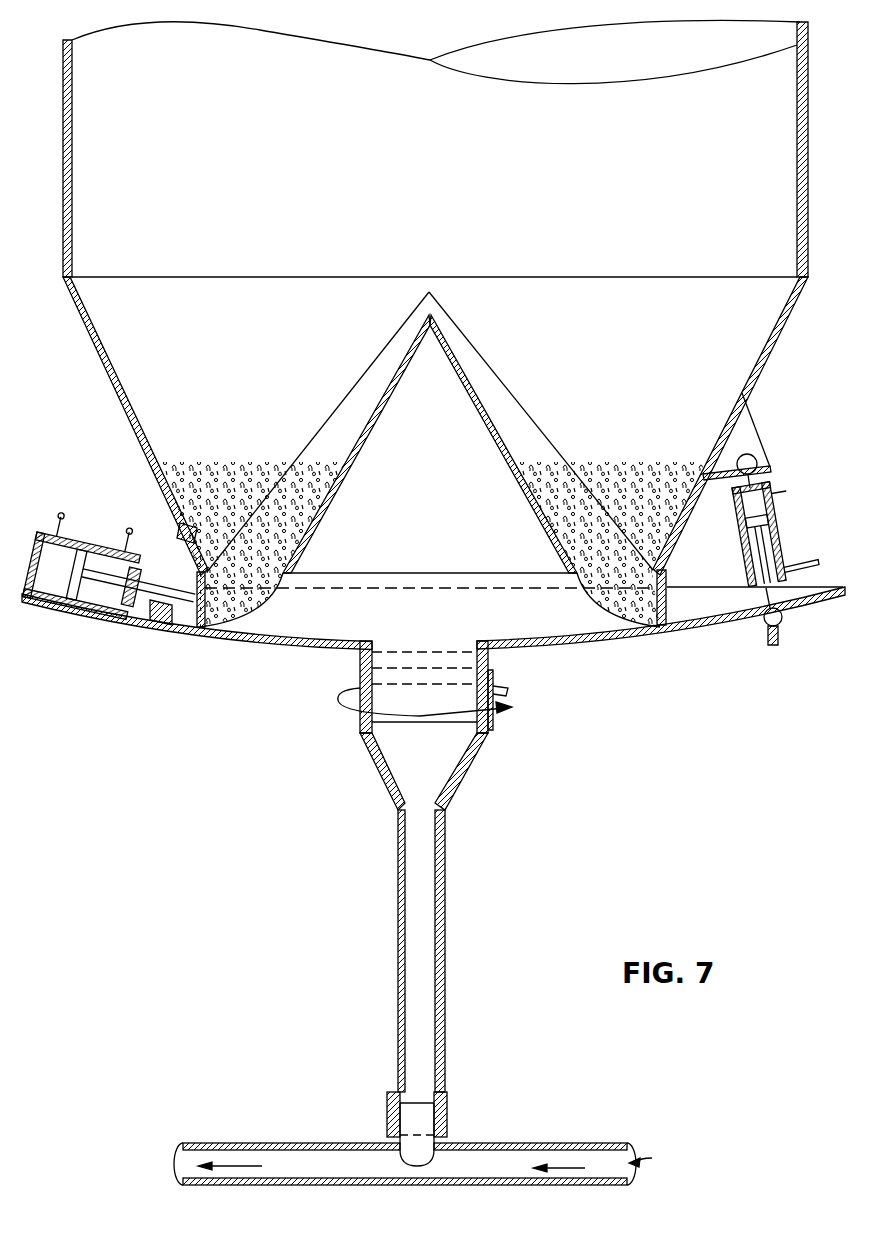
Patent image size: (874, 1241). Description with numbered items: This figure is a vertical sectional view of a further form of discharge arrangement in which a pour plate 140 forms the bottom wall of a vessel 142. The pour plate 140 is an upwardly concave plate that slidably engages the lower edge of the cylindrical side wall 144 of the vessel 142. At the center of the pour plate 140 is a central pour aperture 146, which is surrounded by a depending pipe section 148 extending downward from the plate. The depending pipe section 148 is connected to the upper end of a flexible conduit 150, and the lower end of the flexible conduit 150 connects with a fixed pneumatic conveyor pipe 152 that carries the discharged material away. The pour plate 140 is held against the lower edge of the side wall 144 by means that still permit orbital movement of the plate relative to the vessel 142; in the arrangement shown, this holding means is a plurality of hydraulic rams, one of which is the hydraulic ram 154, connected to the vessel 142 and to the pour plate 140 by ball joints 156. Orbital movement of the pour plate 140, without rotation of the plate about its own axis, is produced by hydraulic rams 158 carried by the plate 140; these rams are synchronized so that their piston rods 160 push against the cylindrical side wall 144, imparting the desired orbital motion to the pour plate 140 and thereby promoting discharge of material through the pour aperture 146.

The pour plate 140 is at (724, 630).
The vessel 142 is at (64, 64).
The cylindrical side wall 144 is at (177, 532).
The central pour aperture 146 is at (365, 662).
The depending pipe section 148 is at (486, 660).
The flexible conduit 150 is at (445, 933).
The pneumatic conveyor pipe 152 is at (547, 1148).
The hydraulic ram 154 is at (790, 530).
The ball joints 156 is at (780, 450).
The hydraulic rams 158 is at (103, 542).
The piston rods 160 is at (170, 612).